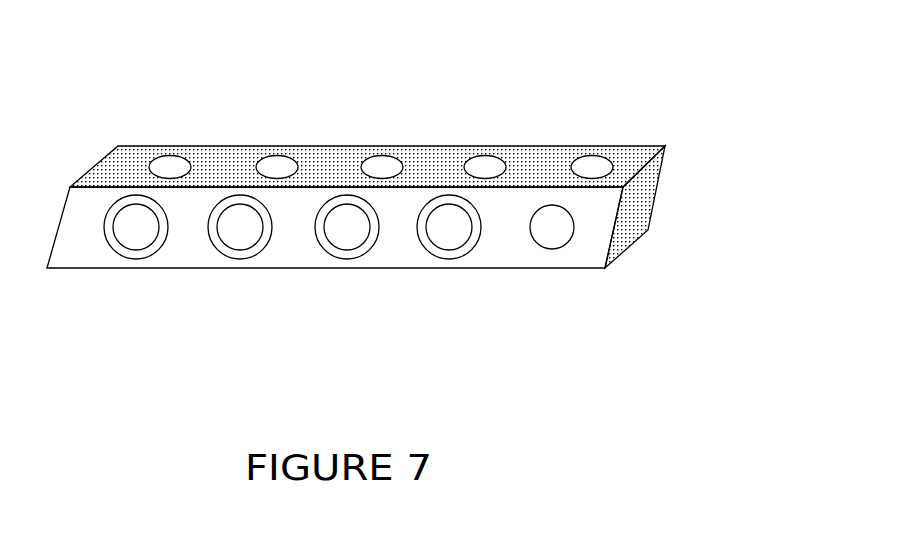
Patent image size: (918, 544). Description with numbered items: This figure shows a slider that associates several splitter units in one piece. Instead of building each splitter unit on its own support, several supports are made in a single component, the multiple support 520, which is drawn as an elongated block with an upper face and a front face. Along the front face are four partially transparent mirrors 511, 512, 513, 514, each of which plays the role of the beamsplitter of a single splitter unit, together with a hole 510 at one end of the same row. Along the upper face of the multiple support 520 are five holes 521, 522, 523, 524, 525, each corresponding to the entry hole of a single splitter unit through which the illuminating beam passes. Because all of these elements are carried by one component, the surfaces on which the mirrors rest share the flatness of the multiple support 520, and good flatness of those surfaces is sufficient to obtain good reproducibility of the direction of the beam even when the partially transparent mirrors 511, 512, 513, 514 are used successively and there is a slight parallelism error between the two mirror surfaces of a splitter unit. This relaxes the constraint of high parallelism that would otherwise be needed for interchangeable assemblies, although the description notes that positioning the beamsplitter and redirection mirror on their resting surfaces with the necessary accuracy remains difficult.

The hole 510 is at (595, 262).
The partially transparent mirror 511 is at (481, 264).
The partially transparent mirror 512 is at (376, 264).
The partially transparent mirror 513 is at (270, 264).
The partially transparent mirror 514 is at (167, 264).
The multiple support 520 is at (409, 207).
The hole 521 is at (643, 134).
The hole 522 is at (542, 107).
The hole 523 is at (418, 128).
The hole 524 is at (314, 128).
The hole 525 is at (206, 128).